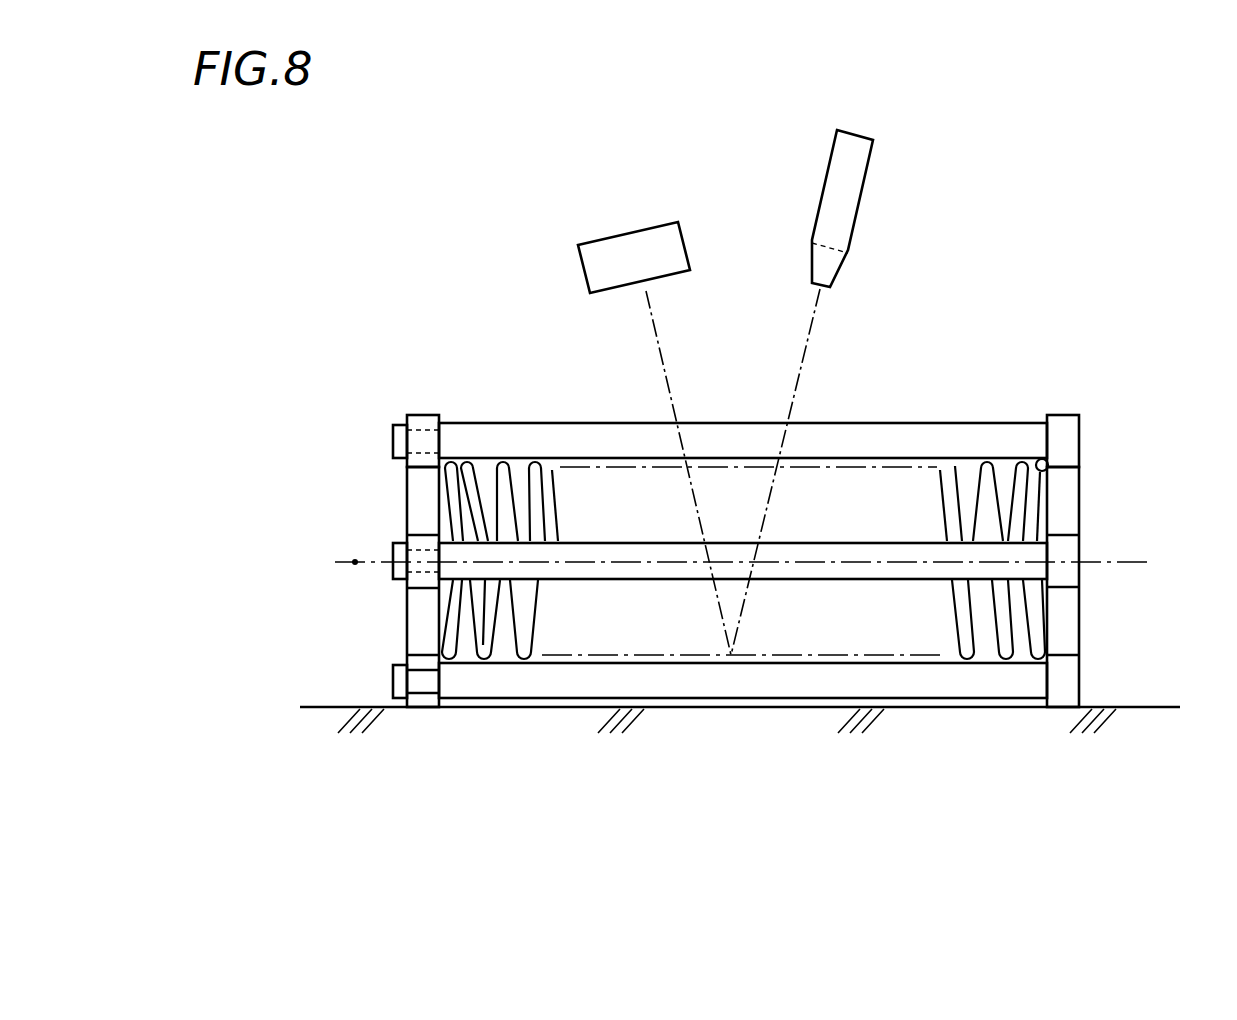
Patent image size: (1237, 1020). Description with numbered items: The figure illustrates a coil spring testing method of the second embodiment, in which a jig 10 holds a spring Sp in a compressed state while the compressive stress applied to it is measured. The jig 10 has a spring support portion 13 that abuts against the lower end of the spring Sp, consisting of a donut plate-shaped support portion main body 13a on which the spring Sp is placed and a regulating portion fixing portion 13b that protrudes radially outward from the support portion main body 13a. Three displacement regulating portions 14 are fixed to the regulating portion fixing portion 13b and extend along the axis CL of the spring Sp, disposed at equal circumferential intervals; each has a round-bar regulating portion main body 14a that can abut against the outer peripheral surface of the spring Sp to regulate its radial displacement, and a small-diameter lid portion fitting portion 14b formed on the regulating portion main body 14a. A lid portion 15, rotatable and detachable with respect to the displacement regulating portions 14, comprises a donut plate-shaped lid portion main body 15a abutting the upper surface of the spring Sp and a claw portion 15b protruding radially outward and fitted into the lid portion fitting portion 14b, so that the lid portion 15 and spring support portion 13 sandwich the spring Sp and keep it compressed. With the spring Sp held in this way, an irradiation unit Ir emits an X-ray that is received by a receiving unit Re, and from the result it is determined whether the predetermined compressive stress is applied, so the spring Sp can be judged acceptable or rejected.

The jig 10 is at (452, 248).
The spring support portion 13 is at (1161, 357).
The support portion main body 13a is at (1062, 507).
The regulating portion fixing portion 13b is at (1059, 432).
The displacement regulating portion 14 is at (583, 440).
The regulating portion main body 14a is at (545, 685).
The lid portion fitting portion 14b is at (426, 690).
The lid portion 15 is at (318, 357).
The lid portion main body 15a is at (424, 507).
The claw portion 15b is at (424, 418).
The spring Sp is at (494, 478).
The receiving unit Re is at (624, 234).
The irradiation unit Ir is at (826, 183).
The axis CL is at (355, 562).